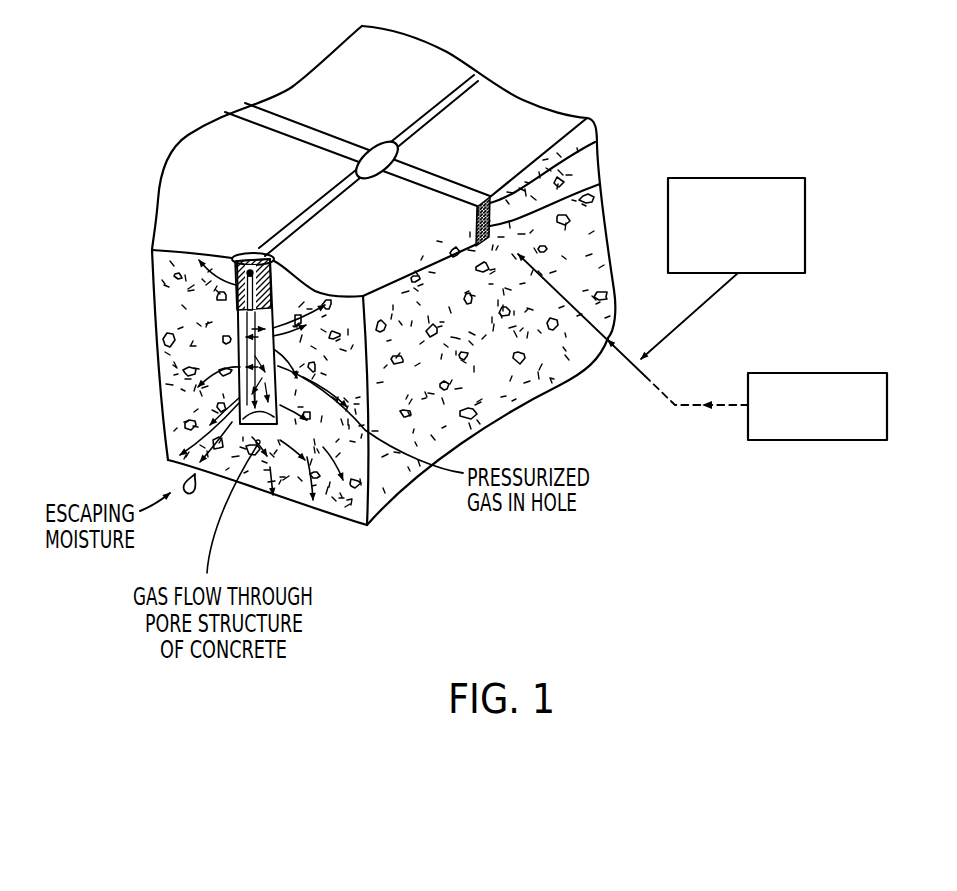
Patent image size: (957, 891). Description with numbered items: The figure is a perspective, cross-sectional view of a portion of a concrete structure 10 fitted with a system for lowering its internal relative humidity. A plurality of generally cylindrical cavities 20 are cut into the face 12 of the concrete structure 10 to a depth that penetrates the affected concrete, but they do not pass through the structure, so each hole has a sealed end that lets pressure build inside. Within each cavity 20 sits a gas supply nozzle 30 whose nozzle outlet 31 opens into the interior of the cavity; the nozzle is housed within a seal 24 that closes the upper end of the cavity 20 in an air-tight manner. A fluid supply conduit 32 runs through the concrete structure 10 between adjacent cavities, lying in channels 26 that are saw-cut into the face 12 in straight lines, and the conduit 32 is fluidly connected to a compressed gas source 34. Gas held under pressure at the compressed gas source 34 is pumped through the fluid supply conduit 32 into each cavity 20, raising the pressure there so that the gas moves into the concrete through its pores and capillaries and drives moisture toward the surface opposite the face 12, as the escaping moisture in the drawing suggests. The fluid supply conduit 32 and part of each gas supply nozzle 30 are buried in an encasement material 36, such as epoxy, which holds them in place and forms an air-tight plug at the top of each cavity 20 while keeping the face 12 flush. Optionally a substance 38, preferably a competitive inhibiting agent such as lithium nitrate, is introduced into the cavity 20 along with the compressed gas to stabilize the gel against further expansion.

The concrete structure 10 is at (527, 390).
The face 12 is at (383, 103).
The cylindrical cavities 20 is at (356, 167).
The seal 24 is at (265, 258).
The channels 26 is at (457, 183).
The gas supply nozzle 30 is at (233, 263).
The nozzle outlet 31 is at (238, 312).
The fluid supply conduit 32 is at (600, 184).
The compressed gas source 34 is at (748, 422).
The encasement material 36 is at (596, 142).
The substance 38 is at (806, 226).